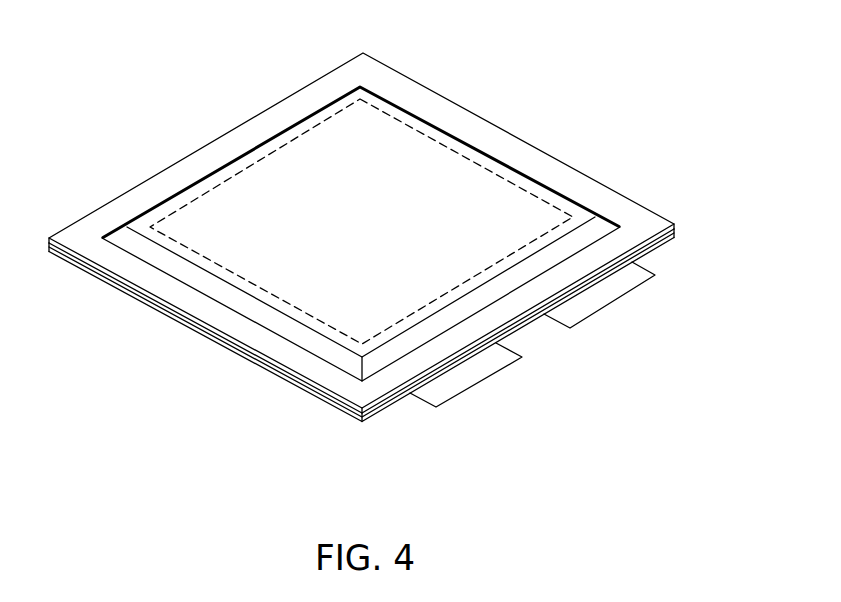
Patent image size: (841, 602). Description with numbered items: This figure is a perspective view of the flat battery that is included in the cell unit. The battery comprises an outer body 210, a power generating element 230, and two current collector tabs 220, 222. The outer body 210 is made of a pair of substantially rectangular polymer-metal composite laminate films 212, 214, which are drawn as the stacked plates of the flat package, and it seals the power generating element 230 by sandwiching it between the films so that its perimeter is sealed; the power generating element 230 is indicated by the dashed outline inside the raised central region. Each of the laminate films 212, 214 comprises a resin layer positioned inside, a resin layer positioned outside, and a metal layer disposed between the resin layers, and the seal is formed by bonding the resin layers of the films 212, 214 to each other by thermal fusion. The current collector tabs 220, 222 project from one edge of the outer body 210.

The outer body 210 is at (361, 237).
The polymer-metal composite laminate film 212 is at (213, 333).
The polymer-metal composite laminate film 214 is at (233, 355).
The current collector tab 220 is at (482, 385).
The current collector tab 222 is at (610, 303).
The power generating element 230 is at (471, 160).